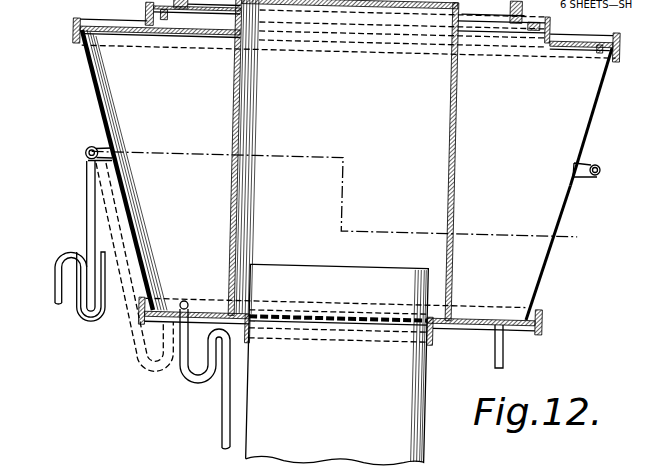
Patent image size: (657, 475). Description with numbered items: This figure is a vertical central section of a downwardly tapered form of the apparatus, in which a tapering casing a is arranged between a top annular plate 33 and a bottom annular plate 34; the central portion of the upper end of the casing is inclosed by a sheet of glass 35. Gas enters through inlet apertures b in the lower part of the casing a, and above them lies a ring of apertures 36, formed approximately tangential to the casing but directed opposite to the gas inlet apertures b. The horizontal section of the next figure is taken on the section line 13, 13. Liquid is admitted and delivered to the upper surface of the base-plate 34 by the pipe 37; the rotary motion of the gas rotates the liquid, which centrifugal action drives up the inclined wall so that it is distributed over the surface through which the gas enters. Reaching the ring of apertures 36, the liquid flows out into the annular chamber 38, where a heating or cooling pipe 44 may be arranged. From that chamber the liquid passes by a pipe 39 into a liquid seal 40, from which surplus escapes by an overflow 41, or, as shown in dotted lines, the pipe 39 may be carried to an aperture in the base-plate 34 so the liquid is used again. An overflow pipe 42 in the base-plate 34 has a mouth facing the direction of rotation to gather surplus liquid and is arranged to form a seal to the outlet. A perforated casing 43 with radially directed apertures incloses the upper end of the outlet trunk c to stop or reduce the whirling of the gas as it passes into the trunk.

The section line 13 is at (86, 155).
The top annular plate 33 is at (565, 43).
The bottom annular plate 34 is at (477, 330).
The sheet of glass 35 is at (217, 0).
The ring of apertures 36 is at (577, 168).
The pipe 37 is at (504, 352).
The annular chamber 38 is at (92, 146).
The pipe 39 is at (93, 167).
The liquid seal 40 is at (77, 305).
The overflow 41 is at (56, 270).
The overflow pipe 42 is at (222, 402).
The perforated casing 43 is at (233, 108).
The heating or cooling pipe 44 is at (601, 167).
The tapering casing a is at (593, 128).
The inlet apertures b is at (558, 218).
The outlet trunk c is at (430, 405).